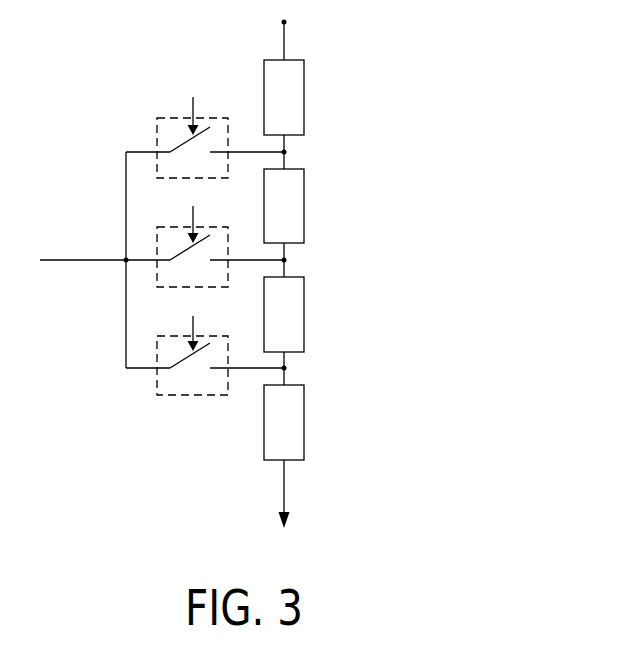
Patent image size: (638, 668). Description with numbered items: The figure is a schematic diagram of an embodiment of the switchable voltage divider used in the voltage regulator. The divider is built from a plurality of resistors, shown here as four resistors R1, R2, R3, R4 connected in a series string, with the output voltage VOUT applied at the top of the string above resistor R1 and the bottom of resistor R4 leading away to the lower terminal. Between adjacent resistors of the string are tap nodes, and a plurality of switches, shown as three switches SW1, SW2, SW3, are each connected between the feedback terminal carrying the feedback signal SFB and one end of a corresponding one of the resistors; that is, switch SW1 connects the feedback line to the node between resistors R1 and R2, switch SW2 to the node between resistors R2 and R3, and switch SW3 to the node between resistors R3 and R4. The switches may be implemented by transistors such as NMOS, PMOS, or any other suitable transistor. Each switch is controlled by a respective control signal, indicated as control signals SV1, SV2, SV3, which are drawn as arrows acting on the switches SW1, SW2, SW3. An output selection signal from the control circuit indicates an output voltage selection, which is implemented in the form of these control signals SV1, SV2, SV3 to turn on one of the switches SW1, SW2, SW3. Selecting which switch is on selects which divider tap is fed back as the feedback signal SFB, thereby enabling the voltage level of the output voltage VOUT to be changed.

The resistor R1 is at (303, 97).
The resistor R2 is at (303, 206).
The resistor R3 is at (303, 314).
The resistor R4 is at (303, 422).
The switch SW1 is at (193, 178).
The switch SW2 is at (193, 287).
The switch SW3 is at (193, 395).
The control signal SV1 is at (176, 106).
The control signal SV2 is at (176, 214).
The control signal SV3 is at (176, 324).
The feedback signal SFB is at (84, 260).
The output voltage VOUT is at (310, 30).